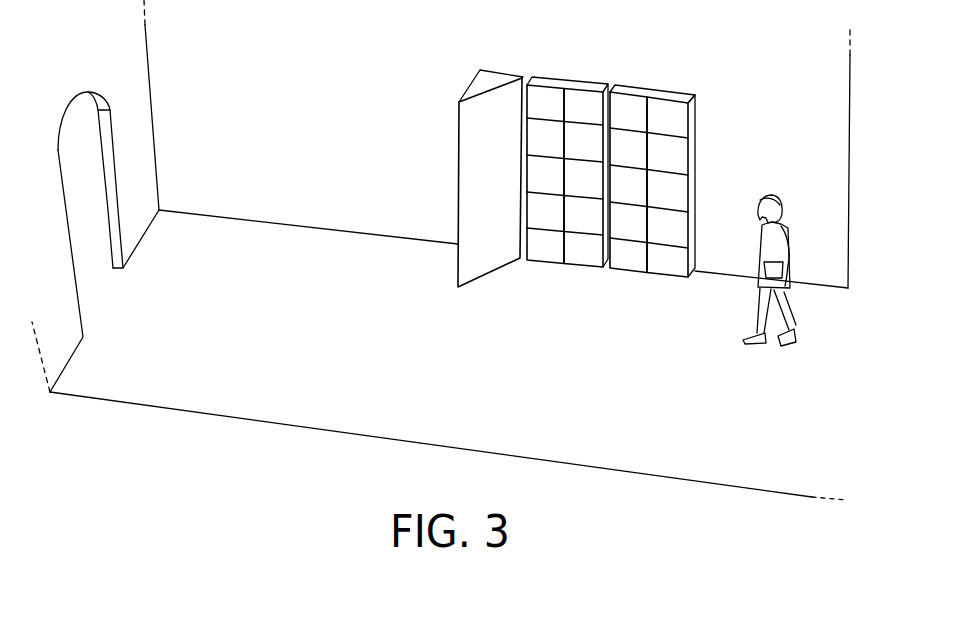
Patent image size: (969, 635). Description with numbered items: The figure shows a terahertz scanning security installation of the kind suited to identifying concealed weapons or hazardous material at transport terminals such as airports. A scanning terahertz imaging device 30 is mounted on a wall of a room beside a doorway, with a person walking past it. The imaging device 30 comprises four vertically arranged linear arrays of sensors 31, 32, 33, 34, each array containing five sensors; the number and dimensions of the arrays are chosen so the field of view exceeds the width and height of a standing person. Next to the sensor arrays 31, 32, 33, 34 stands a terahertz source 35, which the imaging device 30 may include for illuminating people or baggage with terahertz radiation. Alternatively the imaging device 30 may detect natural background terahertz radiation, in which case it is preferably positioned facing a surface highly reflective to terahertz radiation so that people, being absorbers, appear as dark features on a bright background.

The scanning terahertz imaging device 30 is at (692, 93).
The linear array of sensors 31 is at (550, 255).
The linear array of sensors 32 is at (587, 260).
The linear array of sensors 33 is at (628, 265).
The linear array of sensors 34 is at (670, 268).
The terahertz source 35 is at (477, 85).